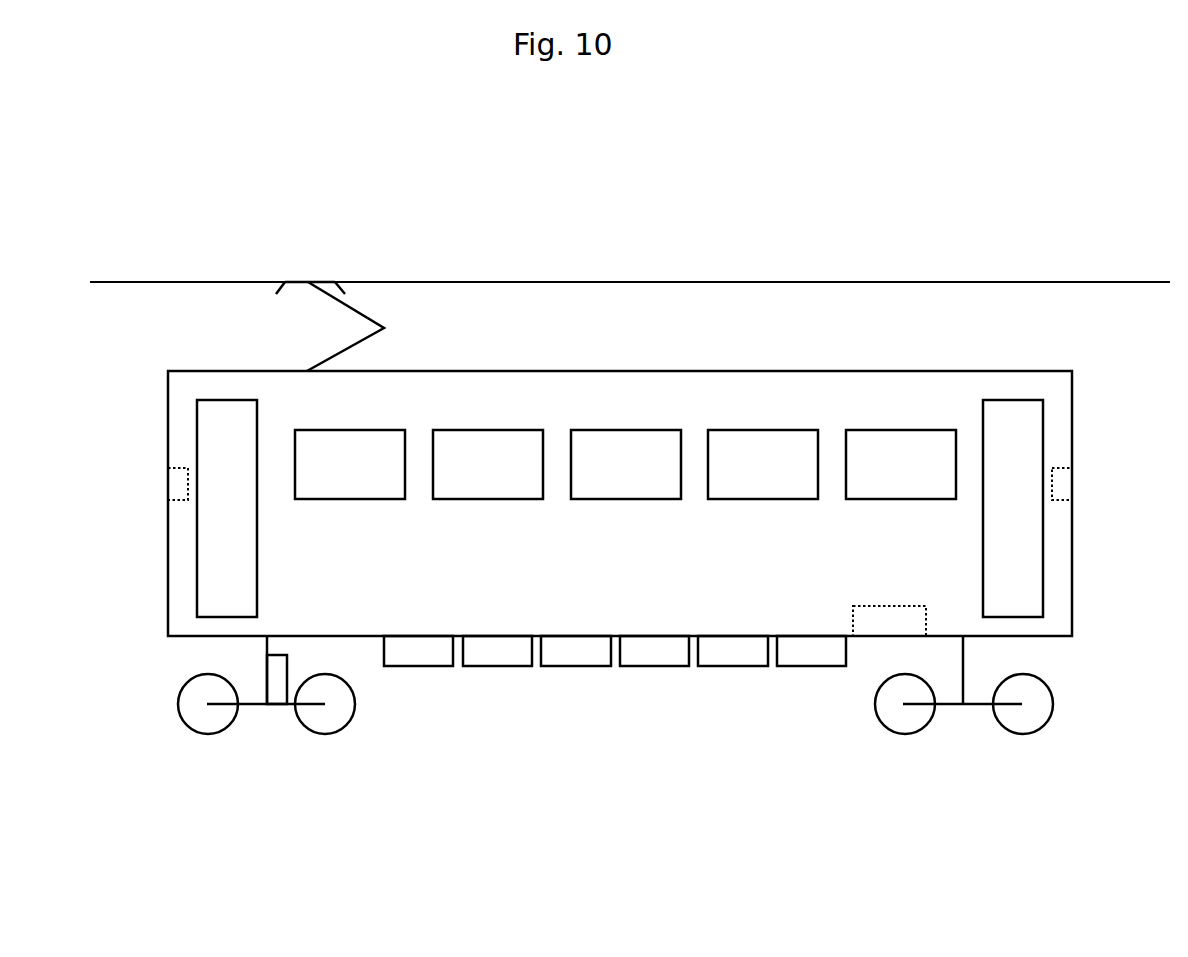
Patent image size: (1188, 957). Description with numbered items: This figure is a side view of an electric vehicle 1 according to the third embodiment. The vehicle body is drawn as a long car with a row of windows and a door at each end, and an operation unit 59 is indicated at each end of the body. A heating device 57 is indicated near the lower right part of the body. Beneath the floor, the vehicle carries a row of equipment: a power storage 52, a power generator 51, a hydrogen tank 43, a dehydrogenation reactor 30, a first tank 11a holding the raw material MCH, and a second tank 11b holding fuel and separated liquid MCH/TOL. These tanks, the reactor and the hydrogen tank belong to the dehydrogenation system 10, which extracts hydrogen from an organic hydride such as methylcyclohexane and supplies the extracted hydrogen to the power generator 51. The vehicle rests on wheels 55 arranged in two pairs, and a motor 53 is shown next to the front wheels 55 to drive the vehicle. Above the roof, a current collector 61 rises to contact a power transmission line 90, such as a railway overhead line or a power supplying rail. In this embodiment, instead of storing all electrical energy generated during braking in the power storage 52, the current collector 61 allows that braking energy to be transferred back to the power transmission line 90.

The electric vehicle 1 is at (158, 838).
The dehydrogenation system 10 is at (789, 792).
The first tank 11a is at (728, 667).
The second tank 11b is at (817, 667).
The dehydrogenation reactor 30 is at (640, 667).
The hydrogen tank 43 is at (571, 667).
The power generator 51 is at (503, 667).
The power storage 52 is at (425, 667).
The motor 53 is at (277, 698).
The wheels 55 is at (195, 725).
The heating device 57 is at (894, 605).
The operation unit 59 is at (178, 487).
The current collector 61 is at (376, 316).
The power transmission line 90 is at (580, 282).